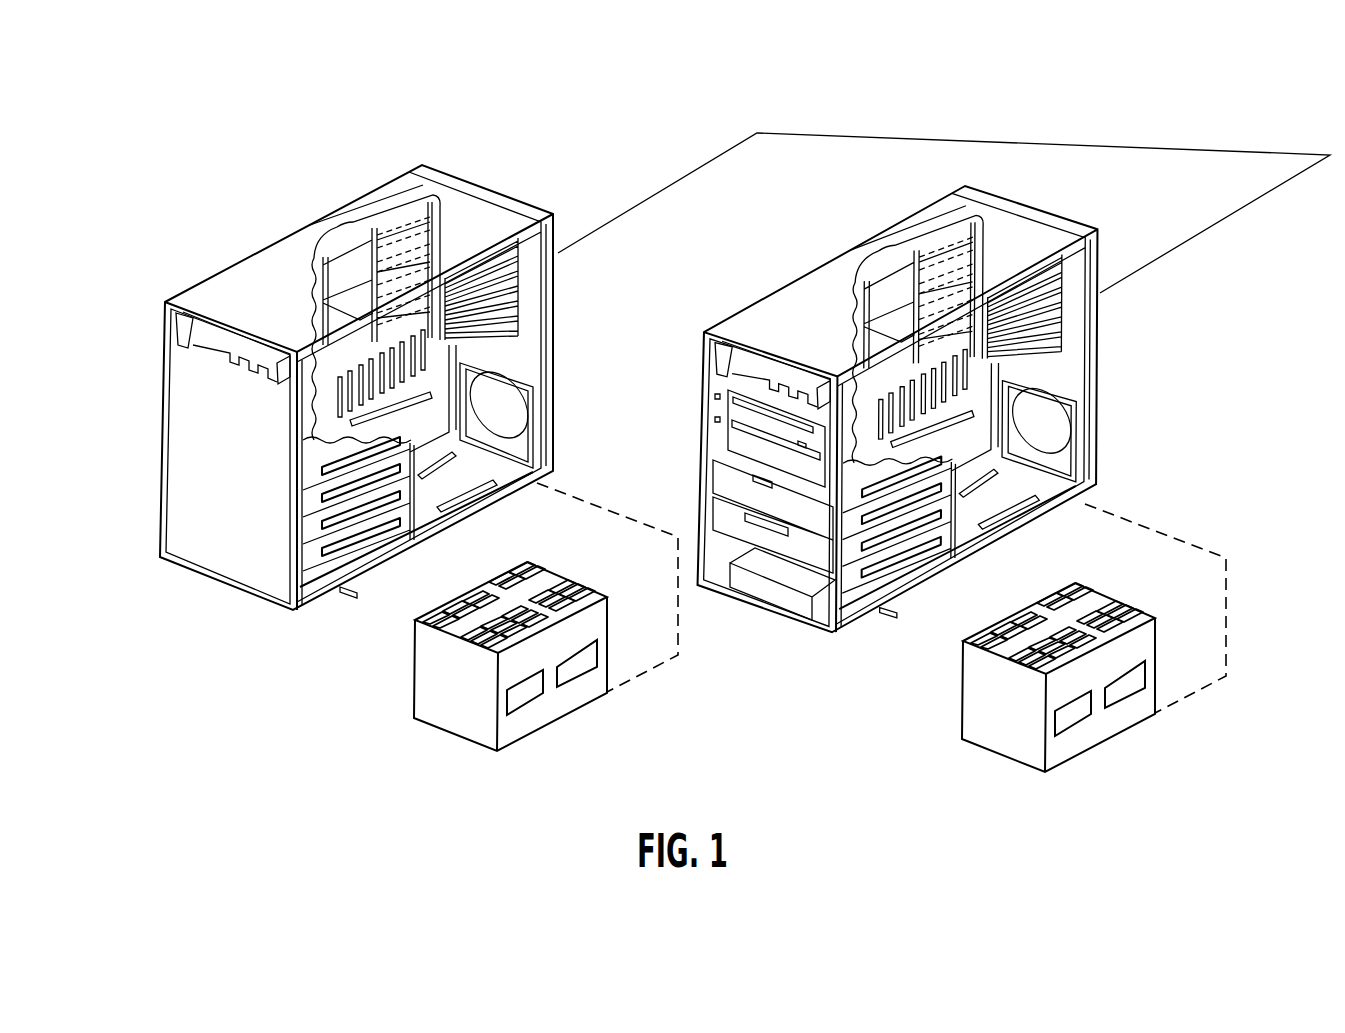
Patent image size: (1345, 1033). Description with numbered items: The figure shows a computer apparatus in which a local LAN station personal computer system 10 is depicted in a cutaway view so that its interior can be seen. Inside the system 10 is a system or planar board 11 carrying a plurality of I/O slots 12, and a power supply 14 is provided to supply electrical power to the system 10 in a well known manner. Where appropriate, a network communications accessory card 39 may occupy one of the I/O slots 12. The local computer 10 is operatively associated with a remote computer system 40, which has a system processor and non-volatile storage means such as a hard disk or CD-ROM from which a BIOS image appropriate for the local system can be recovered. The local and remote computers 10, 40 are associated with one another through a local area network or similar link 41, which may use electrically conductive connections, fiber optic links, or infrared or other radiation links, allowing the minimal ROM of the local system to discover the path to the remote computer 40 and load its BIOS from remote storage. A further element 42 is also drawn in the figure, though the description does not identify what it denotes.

The personal computer system 10 is at (422, 164).
The planar board 11 is at (343, 395).
The I/O slots 12 is at (443, 205).
The power supply 14 is at (440, 725).
The network communications accessory card 39 is at (445, 323).
The remote computer system 40 is at (1100, 438).
The link 41 is at (778, 604).
The side panel cover 42 is at (933, 142).